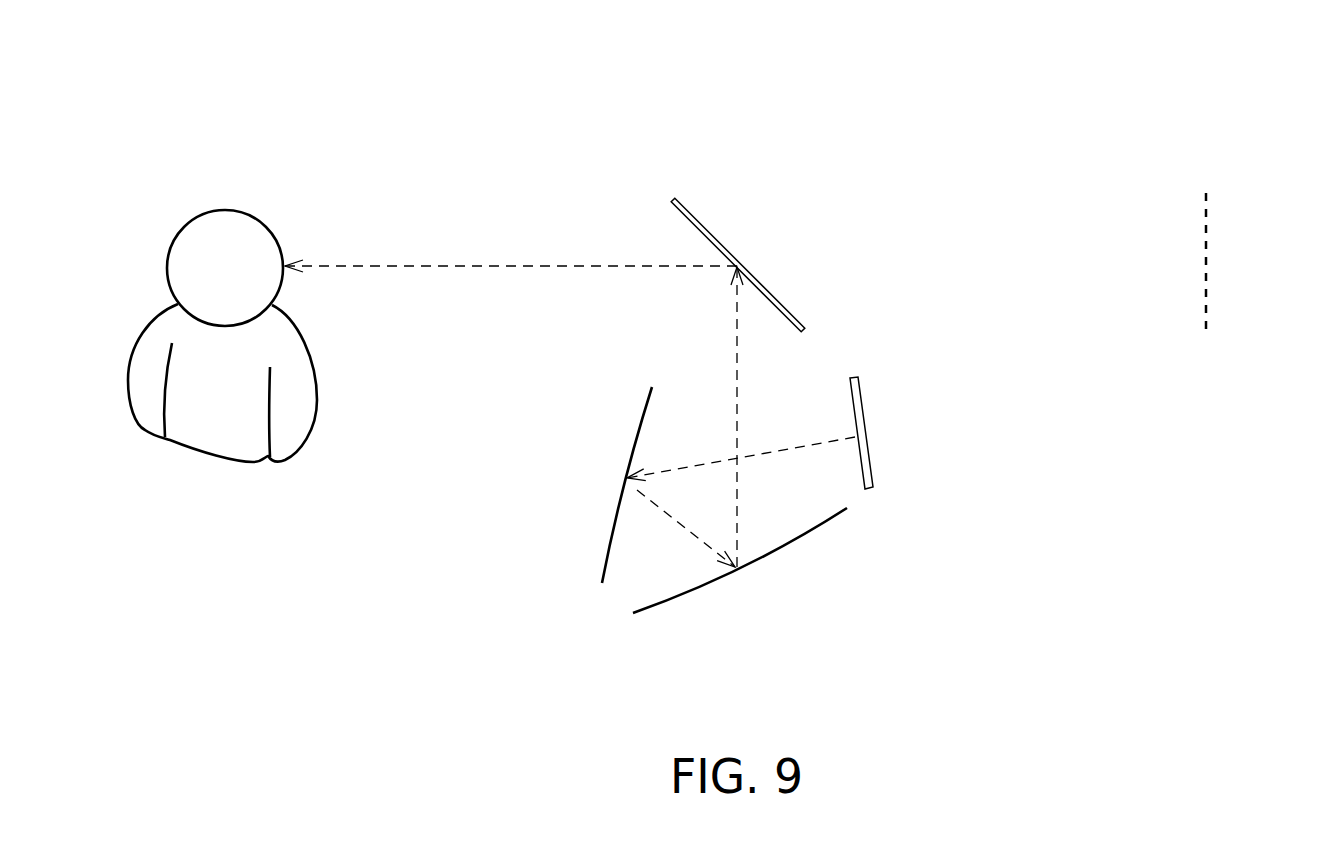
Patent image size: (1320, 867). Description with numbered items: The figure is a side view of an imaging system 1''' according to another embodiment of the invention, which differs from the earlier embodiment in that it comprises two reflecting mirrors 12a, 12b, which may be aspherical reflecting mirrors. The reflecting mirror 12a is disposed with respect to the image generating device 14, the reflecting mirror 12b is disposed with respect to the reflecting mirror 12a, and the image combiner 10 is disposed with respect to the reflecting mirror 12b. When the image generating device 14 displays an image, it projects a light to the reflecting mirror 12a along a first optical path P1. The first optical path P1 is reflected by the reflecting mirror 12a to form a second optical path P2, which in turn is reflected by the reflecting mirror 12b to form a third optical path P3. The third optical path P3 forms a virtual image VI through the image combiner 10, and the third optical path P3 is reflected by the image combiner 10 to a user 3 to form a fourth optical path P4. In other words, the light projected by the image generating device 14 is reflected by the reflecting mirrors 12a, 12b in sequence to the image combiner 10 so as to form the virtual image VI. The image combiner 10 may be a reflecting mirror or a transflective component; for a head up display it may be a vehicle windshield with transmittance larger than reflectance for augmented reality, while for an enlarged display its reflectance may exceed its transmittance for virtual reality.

The user 3 is at (258, 220).
The image combiner 10 is at (702, 222).
The image generating device 14 is at (873, 467).
The reflecting mirror 12a is at (607, 553).
The reflecting mirror 12b is at (677, 600).
The first optical path P1 is at (688, 468).
The second optical path P2 is at (677, 518).
The third optical path P3 is at (737, 356).
The fourth optical path P4 is at (453, 265).
The virtual image VI is at (1207, 218).
The imaging system 1''' is at (982, 91).